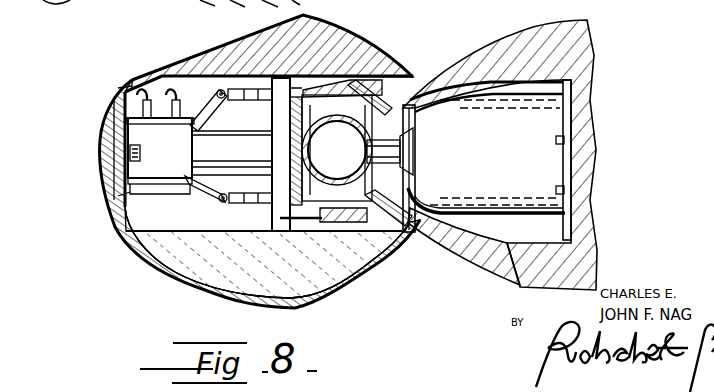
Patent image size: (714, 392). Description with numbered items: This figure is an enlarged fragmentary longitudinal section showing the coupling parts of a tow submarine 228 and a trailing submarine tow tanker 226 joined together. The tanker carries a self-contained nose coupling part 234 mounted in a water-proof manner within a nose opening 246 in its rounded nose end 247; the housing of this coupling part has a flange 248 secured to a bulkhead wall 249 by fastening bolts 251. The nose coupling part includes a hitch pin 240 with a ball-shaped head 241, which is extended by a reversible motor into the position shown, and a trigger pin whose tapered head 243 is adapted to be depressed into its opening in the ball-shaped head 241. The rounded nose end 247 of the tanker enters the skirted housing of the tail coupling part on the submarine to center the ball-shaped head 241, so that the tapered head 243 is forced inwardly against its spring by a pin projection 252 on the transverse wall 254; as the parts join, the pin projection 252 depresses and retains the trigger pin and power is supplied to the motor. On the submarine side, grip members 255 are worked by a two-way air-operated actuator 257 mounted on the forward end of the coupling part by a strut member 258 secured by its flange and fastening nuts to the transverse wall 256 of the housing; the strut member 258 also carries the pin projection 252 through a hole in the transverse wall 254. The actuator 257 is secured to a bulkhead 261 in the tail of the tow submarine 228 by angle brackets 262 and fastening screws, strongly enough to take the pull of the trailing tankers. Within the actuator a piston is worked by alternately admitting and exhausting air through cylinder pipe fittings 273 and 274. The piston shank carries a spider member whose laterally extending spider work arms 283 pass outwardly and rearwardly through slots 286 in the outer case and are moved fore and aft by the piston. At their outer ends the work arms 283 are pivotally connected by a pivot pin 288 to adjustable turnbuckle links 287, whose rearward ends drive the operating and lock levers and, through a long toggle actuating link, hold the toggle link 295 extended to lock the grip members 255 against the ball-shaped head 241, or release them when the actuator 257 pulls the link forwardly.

The submarine tow tanker 226 is at (570, 46).
The tow submarine 228 is at (308, 279).
The nose coupling part 234 is at (513, 175).
The hitch pin 240 is at (415, 137).
The ball-shaped head 241 is at (352, 170).
The tapered head 243 is at (327, 135).
The nose opening 246 is at (492, 222).
The nose end 247 is at (447, 60).
The flange 248 is at (565, 197).
The bulkhead wall 249 is at (577, 148).
The fastening bolts 251 is at (557, 190).
The pin projection 252 is at (290, 152).
The transverse wall 254 is at (228, 292).
The grip members 255 is at (343, 200).
The transverse wall 256 is at (378, 100).
The two-way air-operated actuator 257 is at (178, 154).
The strut member 258 is at (214, 143).
The bulkhead 261 is at (110, 106).
The angle brackets 262 is at (119, 89).
The cylinder pipe fitting 273 is at (128, 88).
The cylinder pipe fitting 274 is at (141, 92).
The spider work arms 283 is at (192, 88).
The slots 286 is at (108, 232).
The adjustable turnbuckle links 287 is at (245, 89).
The pivot pin 288 is at (175, 272).
The toggle link 295 is at (400, 65).